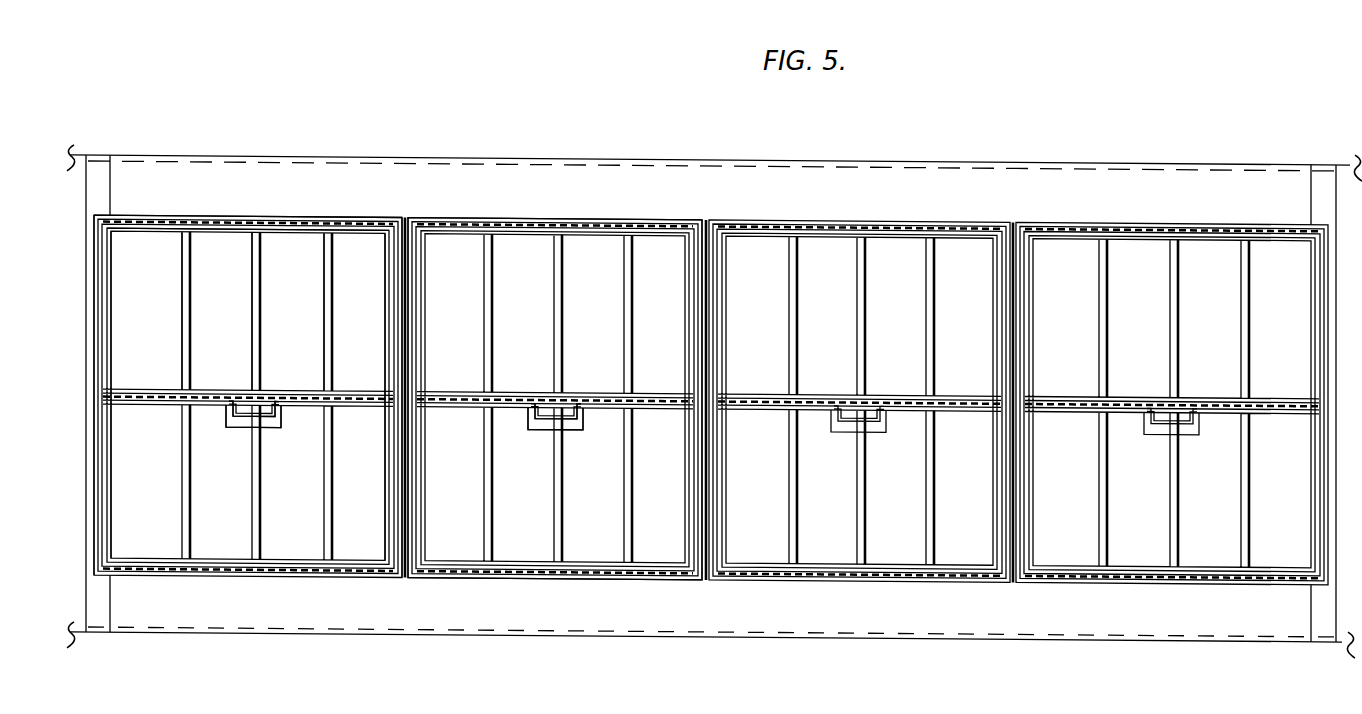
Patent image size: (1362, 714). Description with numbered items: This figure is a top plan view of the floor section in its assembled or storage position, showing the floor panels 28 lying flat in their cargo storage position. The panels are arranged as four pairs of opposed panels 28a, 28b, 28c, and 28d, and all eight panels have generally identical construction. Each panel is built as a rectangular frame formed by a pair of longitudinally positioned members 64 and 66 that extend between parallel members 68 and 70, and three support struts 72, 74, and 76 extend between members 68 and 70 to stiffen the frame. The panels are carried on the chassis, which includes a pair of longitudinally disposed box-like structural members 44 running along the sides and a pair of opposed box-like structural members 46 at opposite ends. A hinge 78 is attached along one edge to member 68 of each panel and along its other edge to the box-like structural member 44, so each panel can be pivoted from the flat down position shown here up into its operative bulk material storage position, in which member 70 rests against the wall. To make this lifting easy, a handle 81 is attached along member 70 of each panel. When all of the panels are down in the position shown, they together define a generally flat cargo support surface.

The floor panels 28 is at (517, 535).
The first pair of opposed panels 28a is at (307, 346).
The second pair of opposed panels 28b is at (604, 329).
The third pair of opposed panels 28c is at (843, 333).
The fourth pair of opposed panels 28d is at (1147, 336).
The longitudinally disposed box-like structural members 44 is at (921, 615).
The opposed box-like structural members 46 is at (1312, 191).
The longitudinally positioned member 64 is at (118, 346).
The longitudinally positioned member 66 is at (390, 336).
The parallel member 68 is at (281, 228).
The parallel member 70 is at (226, 397).
The support strut 72 is at (188, 308).
The support strut 74 is at (262, 308).
The support strut 76 is at (330, 308).
The hinge 78 is at (362, 222).
The handle 81 is at (561, 427).